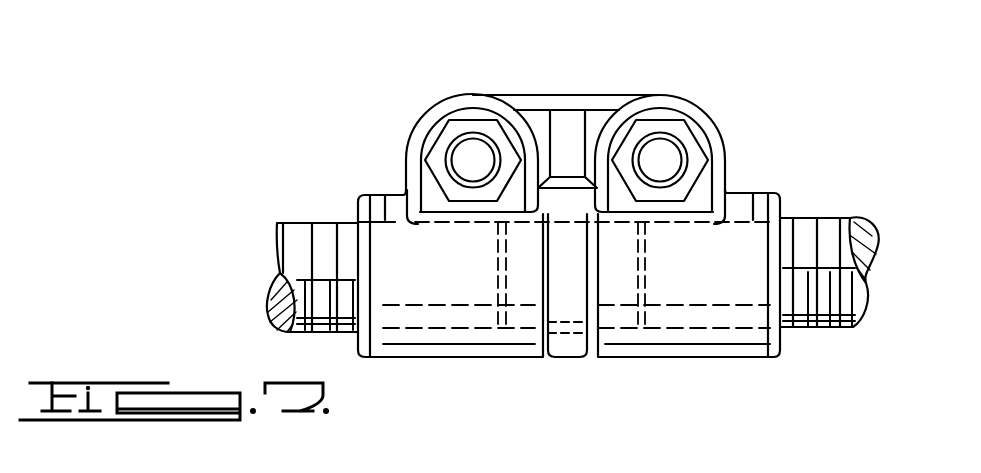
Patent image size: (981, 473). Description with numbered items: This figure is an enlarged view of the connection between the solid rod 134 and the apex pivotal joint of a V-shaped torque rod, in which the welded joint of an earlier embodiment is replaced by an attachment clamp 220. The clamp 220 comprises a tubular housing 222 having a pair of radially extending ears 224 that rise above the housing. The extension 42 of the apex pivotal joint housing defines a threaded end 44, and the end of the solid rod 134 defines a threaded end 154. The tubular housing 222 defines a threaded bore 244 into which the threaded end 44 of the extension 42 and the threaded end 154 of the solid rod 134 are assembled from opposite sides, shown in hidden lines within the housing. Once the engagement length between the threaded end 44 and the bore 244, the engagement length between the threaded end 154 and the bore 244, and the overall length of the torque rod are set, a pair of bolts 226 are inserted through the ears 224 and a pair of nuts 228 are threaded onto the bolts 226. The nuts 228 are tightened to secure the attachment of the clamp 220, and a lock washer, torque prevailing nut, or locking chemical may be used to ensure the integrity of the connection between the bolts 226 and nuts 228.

The attachment clamp 220 is at (573, 222).
The tubular housing 222 is at (505, 348).
The radially extending ears 224 is at (430, 122).
The bolts 226 is at (472, 145).
The nuts 228 is at (438, 142).
The threaded end 44 is at (294, 227).
The extension 42 is at (277, 238).
The solid rod 134 is at (829, 270).
The threaded end 154 is at (818, 316).
The threaded bore 244 is at (437, 327).